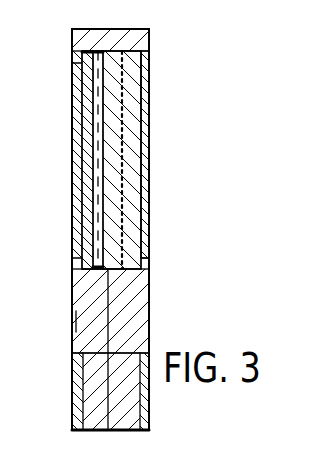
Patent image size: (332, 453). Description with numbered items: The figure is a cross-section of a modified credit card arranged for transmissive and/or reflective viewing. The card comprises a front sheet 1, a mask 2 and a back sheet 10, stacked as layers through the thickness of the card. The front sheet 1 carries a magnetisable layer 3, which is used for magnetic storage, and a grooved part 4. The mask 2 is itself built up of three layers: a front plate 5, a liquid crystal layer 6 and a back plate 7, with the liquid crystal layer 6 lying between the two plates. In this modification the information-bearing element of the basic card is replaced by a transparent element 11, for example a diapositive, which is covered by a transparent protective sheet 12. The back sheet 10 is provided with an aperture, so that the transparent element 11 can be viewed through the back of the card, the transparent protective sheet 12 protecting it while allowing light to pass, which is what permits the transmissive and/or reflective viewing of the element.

The front sheet 1 is at (90, 33).
The mask 2 is at (60, 111).
The magnetisable layer 3 is at (76, 318).
The grooved part 4 is at (76, 383).
The front plate 5 is at (90, 82).
The liquid crystal layer 6 is at (96, 175).
The back plate 7 is at (130, 77).
The back sheet 10 is at (138, 35).
The transparent element 11 is at (137, 108).
The transparent protective sheet 12 is at (122, 177).